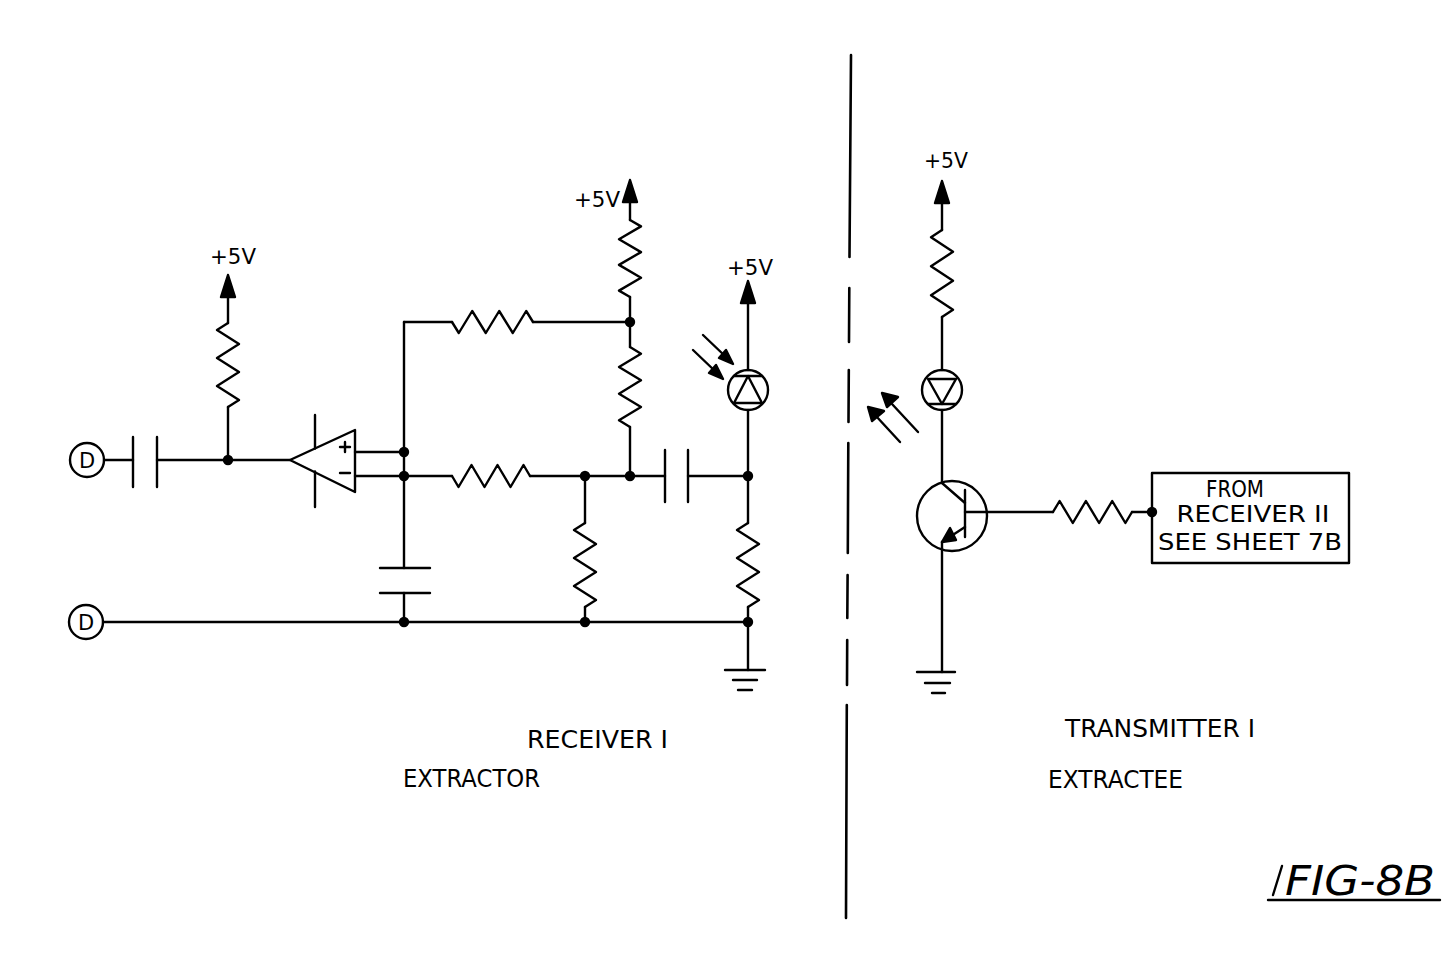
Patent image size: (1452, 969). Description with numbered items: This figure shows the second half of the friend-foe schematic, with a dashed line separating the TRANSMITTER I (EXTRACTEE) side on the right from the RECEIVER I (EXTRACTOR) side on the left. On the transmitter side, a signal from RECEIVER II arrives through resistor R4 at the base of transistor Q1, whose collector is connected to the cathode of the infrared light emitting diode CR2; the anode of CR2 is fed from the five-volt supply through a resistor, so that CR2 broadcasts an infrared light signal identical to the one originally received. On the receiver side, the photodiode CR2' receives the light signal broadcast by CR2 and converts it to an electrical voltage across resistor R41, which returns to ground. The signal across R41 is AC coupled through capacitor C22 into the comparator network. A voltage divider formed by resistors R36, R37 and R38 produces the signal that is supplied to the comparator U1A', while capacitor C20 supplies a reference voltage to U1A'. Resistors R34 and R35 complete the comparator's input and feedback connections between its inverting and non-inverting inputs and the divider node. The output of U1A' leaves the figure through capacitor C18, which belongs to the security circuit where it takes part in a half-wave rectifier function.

The capacitor C18 is at (208, 443).
The comparator U1A' is at (327, 457).
The capacitor C20 is at (422, 563).
The resistor R34 is at (517, 308).
The resistor R37 is at (657, 251).
The resistor R38 is at (657, 399).
The resistor R35 is at (517, 462).
The resistor R36 is at (612, 549).
The capacitor C22 is at (689, 463).
The resistor R41 is at (776, 549).
The infrared receiving diode CR2' is at (757, 378).
The infrared light emitting diode CR2 is at (941, 426).
The transistor Q1 is at (962, 567).
The resistor R4 is at (1058, 498).